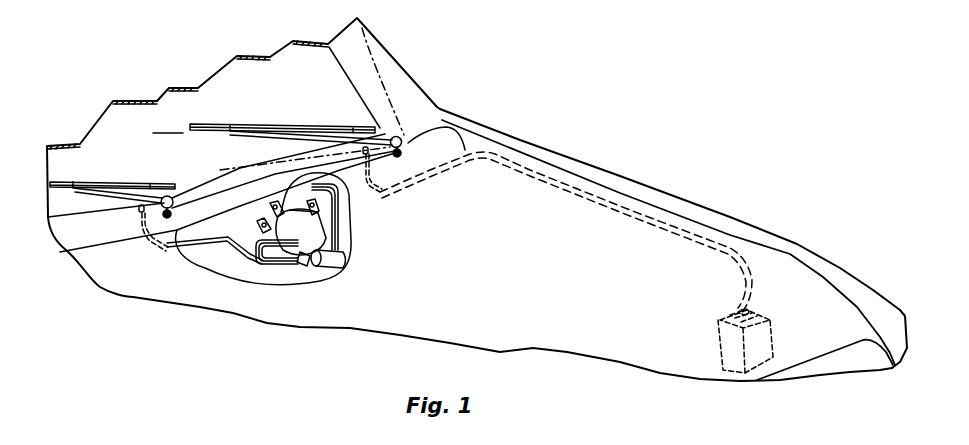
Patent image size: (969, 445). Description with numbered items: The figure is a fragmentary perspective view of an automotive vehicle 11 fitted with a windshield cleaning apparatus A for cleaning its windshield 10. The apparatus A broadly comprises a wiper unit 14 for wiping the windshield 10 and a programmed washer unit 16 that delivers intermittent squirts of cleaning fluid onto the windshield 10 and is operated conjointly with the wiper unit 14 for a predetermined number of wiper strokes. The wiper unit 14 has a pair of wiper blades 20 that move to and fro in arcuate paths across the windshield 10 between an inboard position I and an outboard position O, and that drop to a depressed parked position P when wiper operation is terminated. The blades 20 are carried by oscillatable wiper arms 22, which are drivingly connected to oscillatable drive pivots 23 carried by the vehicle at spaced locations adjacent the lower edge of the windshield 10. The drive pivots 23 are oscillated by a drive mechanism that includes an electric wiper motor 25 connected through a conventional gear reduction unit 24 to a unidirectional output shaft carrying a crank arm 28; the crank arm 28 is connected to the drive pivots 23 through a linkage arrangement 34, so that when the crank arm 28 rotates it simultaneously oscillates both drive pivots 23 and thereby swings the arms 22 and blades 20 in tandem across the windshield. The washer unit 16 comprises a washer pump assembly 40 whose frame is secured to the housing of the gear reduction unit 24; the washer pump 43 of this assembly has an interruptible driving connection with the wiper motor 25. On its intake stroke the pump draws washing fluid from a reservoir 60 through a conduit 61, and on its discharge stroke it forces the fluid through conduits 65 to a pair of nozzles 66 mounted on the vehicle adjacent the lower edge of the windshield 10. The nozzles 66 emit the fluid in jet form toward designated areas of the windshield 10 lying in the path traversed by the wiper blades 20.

The windshield 10 is at (396, 80).
The automotive vehicle 11 is at (614, 172).
The wiper unit 14 is at (356, 260).
The washer unit 16 is at (304, 262).
The wiper blades 20 is at (94, 177).
The wiper arms 22 is at (123, 195).
The drive pivots 23 is at (458, 183).
The gear reduction unit 24 is at (320, 221).
The wiper motor 25 is at (334, 268).
The crank arm 28 is at (282, 203).
The linkage arrangement 34 is at (231, 248).
The washer pump assembly 40 is at (330, 242).
The washer pump 43 is at (292, 262).
The reservoir 60 is at (717, 337).
The conduit 61 is at (643, 220).
The conduits 65 is at (163, 252).
The nozzles 66 is at (140, 212).
The outboard position O is at (374, 56).
The inboard position I is at (163, 132).
The depressed parked position P is at (220, 170).
The windshield cleaning apparatus A is at (310, 287).